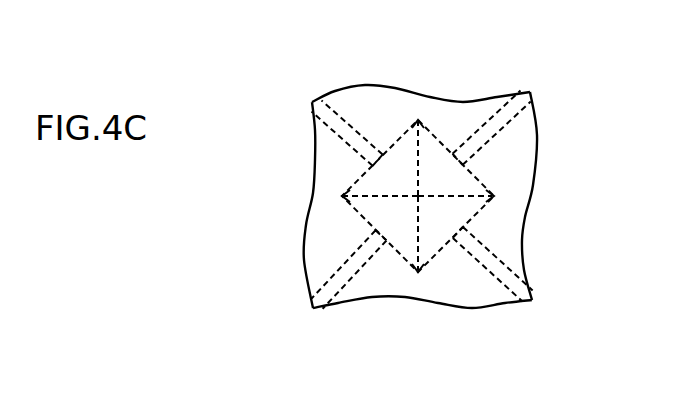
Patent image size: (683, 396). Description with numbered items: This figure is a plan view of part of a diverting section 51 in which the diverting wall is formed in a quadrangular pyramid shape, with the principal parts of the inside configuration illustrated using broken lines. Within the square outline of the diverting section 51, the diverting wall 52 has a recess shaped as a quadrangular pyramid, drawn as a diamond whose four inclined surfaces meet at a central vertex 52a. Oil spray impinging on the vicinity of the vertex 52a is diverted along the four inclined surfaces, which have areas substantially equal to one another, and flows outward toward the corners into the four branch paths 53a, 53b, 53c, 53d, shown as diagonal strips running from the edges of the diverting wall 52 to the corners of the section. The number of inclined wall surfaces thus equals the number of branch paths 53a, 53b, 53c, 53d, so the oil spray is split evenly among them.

The diverting section 51 is at (318, 194).
The diverting wall 52 is at (483, 185).
The vertex 52a is at (422, 205).
The branch path 53a is at (482, 125).
The branch path 53b is at (365, 133).
The branch path 53c is at (348, 260).
The branch path 53d is at (487, 257).